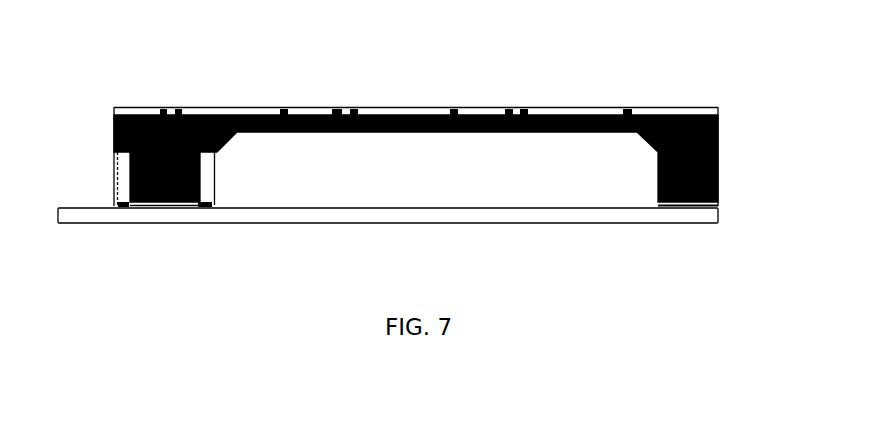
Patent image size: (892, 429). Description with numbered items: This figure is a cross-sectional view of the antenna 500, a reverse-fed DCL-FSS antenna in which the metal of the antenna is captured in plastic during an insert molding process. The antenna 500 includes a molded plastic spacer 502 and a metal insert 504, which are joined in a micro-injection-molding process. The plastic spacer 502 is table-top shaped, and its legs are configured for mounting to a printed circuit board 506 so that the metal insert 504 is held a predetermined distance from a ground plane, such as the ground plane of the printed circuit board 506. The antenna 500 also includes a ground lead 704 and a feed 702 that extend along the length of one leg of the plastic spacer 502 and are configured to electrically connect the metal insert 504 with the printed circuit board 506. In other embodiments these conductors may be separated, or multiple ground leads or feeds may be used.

The antenna 500 is at (651, 328).
The molded plastic spacer 502 is at (718, 173).
The metal insert 504 is at (218, 110).
The printed circuit board 506 is at (335, 218).
The feed 702 is at (118, 242).
The ground lead 704 is at (212, 190).